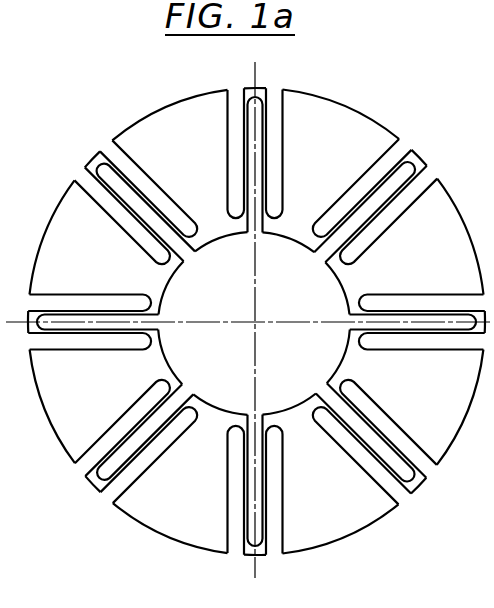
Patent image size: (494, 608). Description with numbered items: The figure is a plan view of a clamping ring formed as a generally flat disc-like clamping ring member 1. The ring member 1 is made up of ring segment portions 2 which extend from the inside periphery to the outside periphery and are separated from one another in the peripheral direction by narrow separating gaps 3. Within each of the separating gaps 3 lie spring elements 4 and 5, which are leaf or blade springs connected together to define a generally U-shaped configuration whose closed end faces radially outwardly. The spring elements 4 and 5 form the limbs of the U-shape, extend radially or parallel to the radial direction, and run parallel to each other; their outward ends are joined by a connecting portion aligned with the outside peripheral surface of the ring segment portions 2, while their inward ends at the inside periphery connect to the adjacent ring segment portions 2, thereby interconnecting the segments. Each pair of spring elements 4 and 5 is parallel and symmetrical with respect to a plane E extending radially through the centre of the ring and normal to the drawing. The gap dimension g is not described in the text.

The clamping ring member 1 is at (132, 547).
The ring segment portions 2 is at (327, 155).
The separating gaps 3 is at (407, 139).
The spring element 4 is at (125, 175).
The spring element 5 is at (120, 199).
The gap / web thickness g is at (417, 158).
The planes E is at (178, 322).